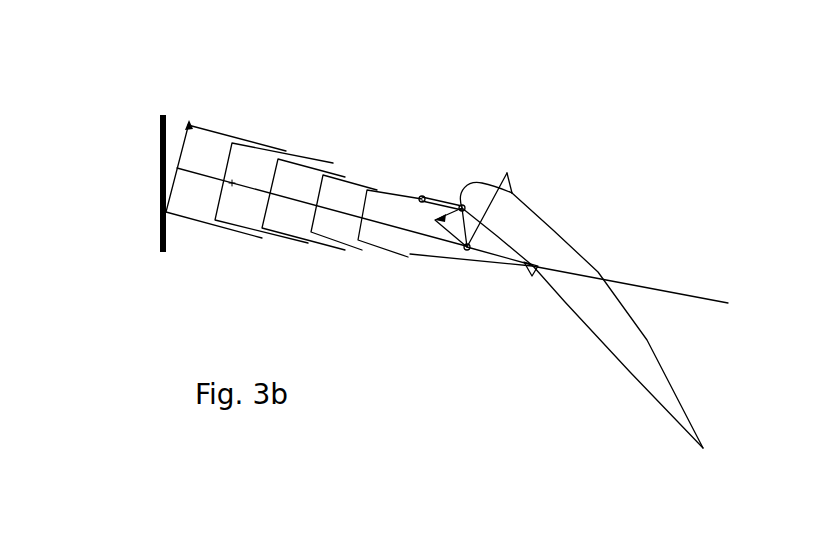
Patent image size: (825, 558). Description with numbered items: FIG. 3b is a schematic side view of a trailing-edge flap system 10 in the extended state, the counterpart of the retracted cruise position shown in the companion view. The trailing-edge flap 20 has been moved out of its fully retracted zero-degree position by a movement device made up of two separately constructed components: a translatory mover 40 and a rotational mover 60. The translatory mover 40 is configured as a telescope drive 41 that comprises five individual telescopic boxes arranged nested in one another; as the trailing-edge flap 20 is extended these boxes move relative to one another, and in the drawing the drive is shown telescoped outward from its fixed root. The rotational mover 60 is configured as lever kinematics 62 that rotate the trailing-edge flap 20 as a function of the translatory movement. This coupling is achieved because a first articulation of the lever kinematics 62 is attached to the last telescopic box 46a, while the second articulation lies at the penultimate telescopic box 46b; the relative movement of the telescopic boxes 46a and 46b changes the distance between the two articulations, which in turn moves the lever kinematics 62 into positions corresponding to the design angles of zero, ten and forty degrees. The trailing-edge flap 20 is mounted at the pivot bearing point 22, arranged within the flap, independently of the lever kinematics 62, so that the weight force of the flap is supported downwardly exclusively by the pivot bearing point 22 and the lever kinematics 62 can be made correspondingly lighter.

The trailing-edge flap system 10 is at (557, 105).
The trailing-edge flap 20 is at (638, 342).
The pivot bearing point 22 is at (545, 292).
The translatory mover 40 is at (447, 172).
The telescope drive 41 is at (335, 164).
The last telescopic box 46a is at (436, 258).
The penultimate telescopic box 46b is at (378, 255).
The rotational mover 60 is at (405, 73).
The lever kinematics 62 is at (456, 193).